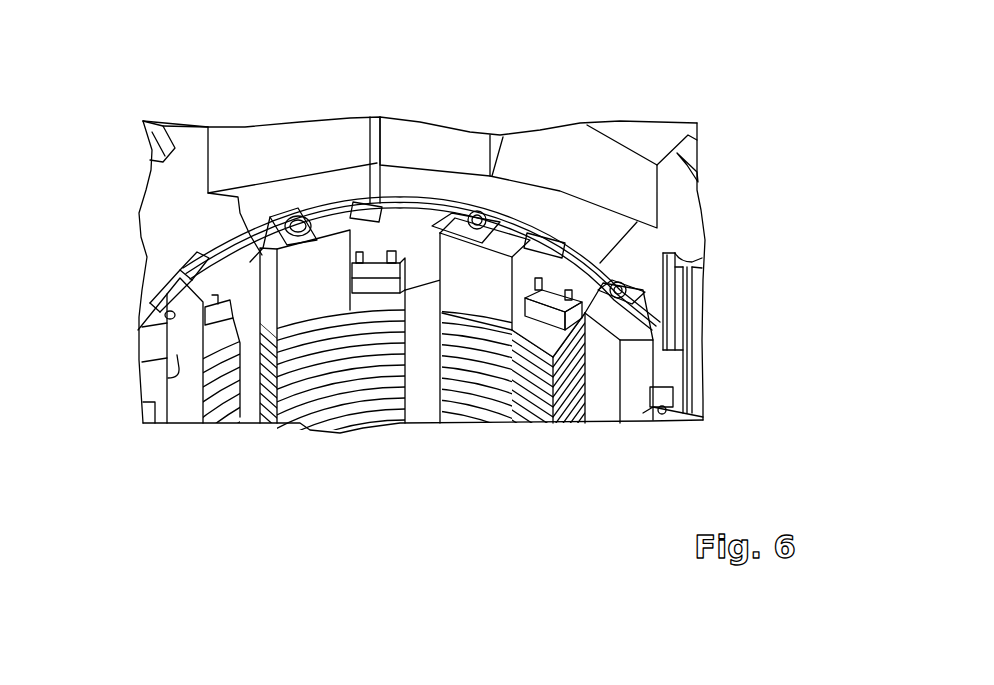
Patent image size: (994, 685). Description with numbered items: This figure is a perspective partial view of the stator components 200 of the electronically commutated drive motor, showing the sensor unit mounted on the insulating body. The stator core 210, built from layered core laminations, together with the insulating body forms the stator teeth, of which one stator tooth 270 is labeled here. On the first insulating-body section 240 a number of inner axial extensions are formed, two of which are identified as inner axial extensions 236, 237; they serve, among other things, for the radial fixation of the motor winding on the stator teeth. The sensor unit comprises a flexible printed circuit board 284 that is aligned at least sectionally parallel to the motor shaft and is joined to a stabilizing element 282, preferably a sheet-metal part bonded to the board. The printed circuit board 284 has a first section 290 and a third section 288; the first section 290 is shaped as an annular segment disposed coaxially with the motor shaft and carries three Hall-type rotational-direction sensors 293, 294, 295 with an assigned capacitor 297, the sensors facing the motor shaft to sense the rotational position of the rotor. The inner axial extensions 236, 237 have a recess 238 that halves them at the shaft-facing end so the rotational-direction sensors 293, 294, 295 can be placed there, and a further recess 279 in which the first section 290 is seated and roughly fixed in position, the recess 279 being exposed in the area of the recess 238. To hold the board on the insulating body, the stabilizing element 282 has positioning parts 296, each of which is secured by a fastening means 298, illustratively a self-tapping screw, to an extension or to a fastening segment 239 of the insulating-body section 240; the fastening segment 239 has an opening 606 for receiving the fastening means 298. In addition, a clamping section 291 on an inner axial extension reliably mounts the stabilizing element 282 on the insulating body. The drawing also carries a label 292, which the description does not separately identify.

The stator components 200 is at (178, 88).
The stator core 210 is at (330, 383).
The inner axial extension 236 is at (168, 378).
The inner axial extension 237 is at (303, 278).
The recess 238 is at (352, 310).
The fastening segment 239 is at (293, 312).
The first insulating-body section 240 is at (247, 127).
The stator tooth 270 is at (307, 168).
The recess 279 is at (165, 302).
The stabilizing element 282 is at (692, 262).
The printed circuit board 284 is at (690, 276).
The third section 288 is at (680, 377).
The first section 290 is at (448, 205).
The clamping section 291 is at (370, 125).
The cover plate portion 292 is at (422, 205).
The rotational-direction sensor 293 is at (180, 405).
The rotational-direction sensor 294 is at (382, 292).
The rotational-direction sensor 295 is at (556, 350).
The positioning part 296 is at (622, 340).
The capacitor 297 is at (651, 420).
The fastening means 298 is at (600, 305).
The opening 606 is at (163, 317).